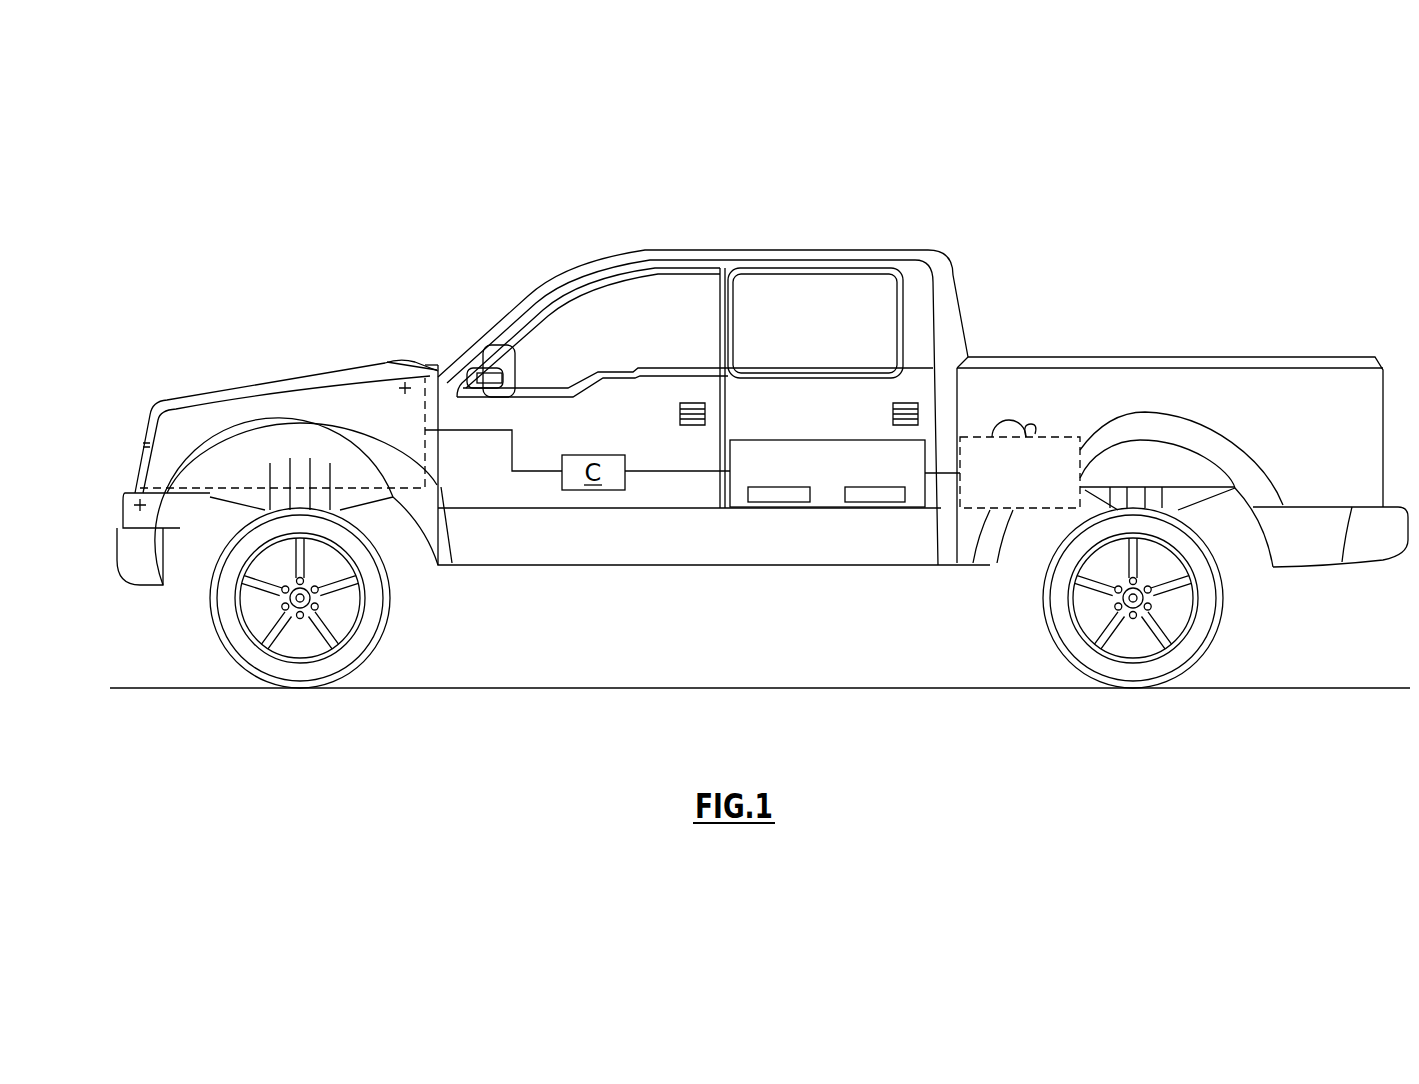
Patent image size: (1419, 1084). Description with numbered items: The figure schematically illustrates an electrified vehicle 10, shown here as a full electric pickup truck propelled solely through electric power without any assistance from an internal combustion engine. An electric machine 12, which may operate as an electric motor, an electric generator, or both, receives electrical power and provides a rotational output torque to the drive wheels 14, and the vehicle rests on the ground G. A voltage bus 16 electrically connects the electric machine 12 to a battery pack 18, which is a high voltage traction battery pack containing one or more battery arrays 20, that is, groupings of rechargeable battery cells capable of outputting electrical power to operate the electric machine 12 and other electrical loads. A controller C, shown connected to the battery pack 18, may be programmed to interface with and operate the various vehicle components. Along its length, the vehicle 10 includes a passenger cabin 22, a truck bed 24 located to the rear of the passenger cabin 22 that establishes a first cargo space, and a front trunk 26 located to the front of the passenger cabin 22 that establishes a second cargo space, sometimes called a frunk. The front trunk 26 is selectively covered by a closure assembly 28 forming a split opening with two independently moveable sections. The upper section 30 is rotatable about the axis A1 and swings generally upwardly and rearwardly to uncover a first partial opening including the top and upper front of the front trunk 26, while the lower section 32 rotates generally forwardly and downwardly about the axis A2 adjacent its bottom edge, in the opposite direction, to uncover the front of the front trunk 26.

The electrified vehicle 10 is at (771, 236).
The electric machine 12 is at (1035, 434).
The drive wheels 14 is at (287, 672).
The voltage bus 16 is at (945, 478).
The battery pack 18 is at (820, 439).
The battery arrays 20 is at (860, 502).
The passenger cabin 22 is at (624, 309).
The truck bed 24 is at (1148, 352).
The front trunk 26 is at (413, 432).
The closure assembly 28 is at (244, 357).
The upper section 30 is at (315, 374).
The lower section 32 is at (130, 472).
The axis A1 is at (403, 391).
The axis A2 is at (134, 505).
The ground G is at (497, 688).